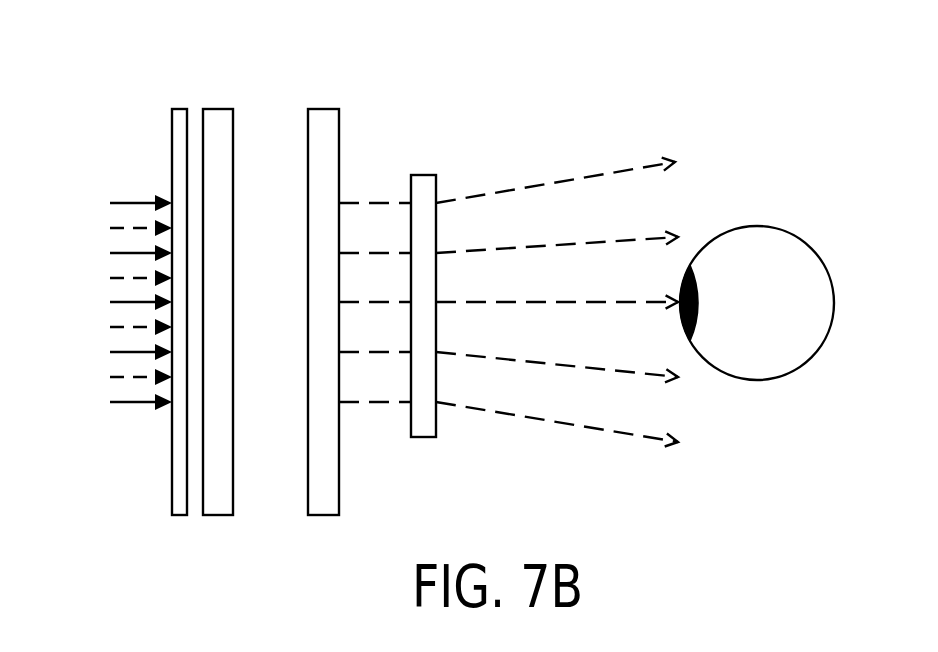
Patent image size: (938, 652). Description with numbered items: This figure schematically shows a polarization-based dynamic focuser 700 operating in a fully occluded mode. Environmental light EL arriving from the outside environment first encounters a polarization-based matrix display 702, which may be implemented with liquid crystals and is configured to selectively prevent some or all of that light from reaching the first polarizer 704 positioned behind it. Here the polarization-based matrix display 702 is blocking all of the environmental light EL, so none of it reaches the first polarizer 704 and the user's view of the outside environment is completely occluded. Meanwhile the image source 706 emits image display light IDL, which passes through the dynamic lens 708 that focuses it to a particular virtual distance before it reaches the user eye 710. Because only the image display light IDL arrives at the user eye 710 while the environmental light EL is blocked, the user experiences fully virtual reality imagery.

The polarization-based dynamic focuser 700 is at (113, 60).
The polarization-based matrix display 702 is at (172, 136).
The first polarizer 704 is at (214, 109).
The image source 706 is at (327, 109).
The dynamic lens 708 is at (436, 193).
The user eye 710 is at (790, 232).
The environmental light EL is at (140, 202).
The image display light IDL is at (542, 420).